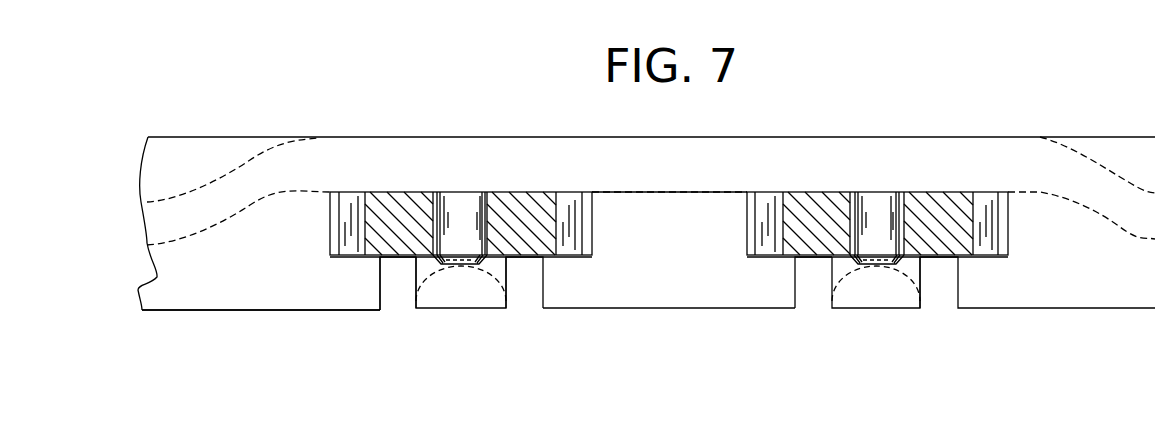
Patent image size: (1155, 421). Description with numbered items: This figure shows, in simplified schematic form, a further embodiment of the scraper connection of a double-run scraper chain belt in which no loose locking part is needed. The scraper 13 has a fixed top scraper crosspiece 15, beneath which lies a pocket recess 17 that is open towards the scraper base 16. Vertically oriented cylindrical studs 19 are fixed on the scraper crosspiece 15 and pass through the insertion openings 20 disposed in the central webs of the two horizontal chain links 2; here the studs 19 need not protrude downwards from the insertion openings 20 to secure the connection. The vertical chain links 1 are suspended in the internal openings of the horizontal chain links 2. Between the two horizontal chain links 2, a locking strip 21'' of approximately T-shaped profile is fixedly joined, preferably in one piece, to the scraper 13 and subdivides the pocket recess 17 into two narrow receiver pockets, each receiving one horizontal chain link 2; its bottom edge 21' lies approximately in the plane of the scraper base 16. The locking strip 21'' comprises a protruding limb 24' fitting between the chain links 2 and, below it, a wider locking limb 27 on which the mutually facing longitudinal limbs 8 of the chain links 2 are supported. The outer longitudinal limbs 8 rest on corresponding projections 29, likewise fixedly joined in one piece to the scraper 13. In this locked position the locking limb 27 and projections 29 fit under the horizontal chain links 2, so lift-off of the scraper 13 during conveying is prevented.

The vertical chain link 1 is at (458, 302).
The horizontal chain link 2 is at (390, 203).
The longitudinal limb 8 is at (345, 227).
The scraper 13 is at (265, 298).
The scraper crosspiece 15 is at (686, 150).
The scraper base 16 is at (196, 310).
The pocket recess 17 is at (400, 300).
The stud 19 is at (458, 205).
The insertion opening 20 is at (490, 210).
The bottom edge of locking strip 21' is at (669, 339).
The locking strip 21'' is at (775, 308).
The protruding limb 24' is at (669, 221).
The locking limb 27 is at (553, 297).
The projection 29 is at (367, 283).